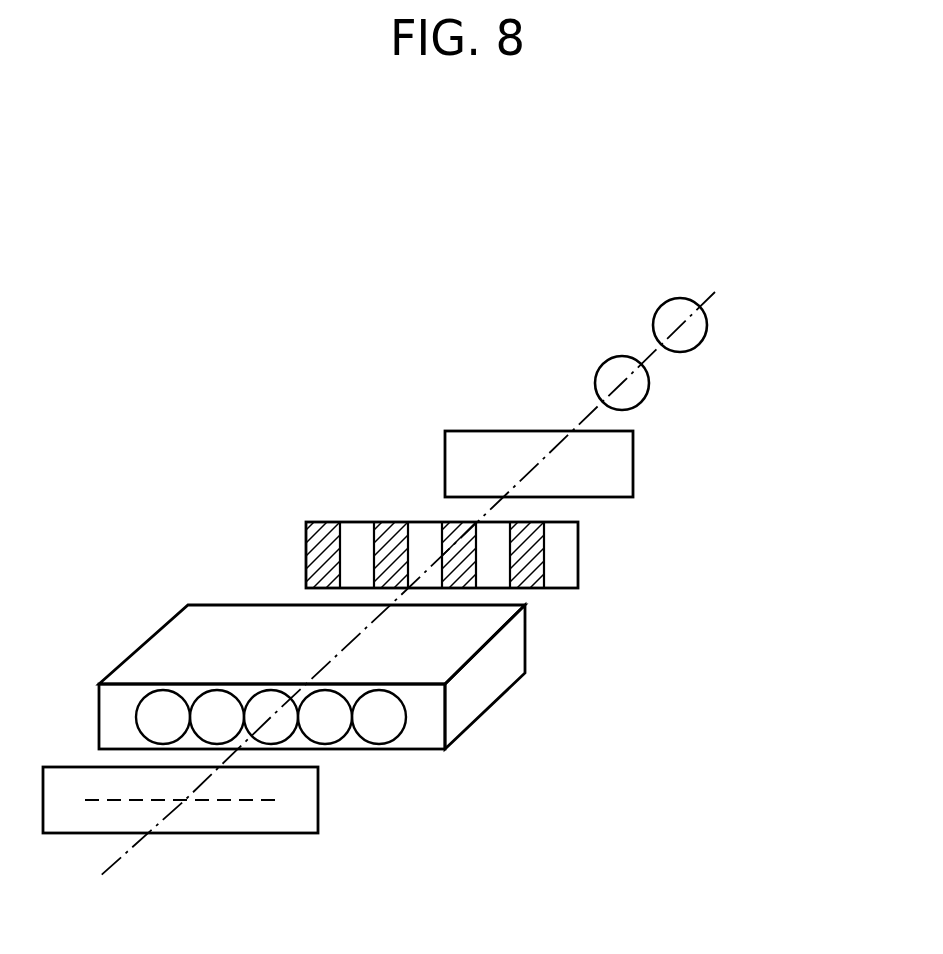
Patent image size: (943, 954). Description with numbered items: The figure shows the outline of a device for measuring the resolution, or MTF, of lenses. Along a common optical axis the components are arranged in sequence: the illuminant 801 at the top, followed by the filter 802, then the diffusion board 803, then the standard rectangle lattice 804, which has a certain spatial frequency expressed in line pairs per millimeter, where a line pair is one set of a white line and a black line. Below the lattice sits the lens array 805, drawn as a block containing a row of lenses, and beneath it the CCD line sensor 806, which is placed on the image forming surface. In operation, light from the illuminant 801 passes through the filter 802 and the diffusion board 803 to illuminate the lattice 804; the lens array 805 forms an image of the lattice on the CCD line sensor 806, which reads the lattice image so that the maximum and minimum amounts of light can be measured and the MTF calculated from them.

The illuminant 801 is at (667, 303).
The filter 802 is at (646, 390).
The diffusion board 803 is at (458, 430).
The standard rectangle lattice 804 is at (335, 520).
The lens array 805 is at (218, 622).
The CCD line sensor 806 is at (318, 795).